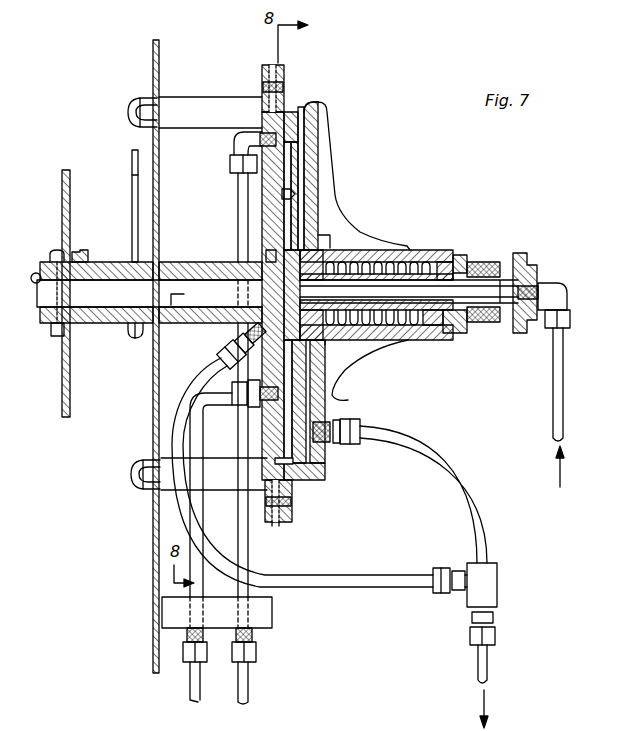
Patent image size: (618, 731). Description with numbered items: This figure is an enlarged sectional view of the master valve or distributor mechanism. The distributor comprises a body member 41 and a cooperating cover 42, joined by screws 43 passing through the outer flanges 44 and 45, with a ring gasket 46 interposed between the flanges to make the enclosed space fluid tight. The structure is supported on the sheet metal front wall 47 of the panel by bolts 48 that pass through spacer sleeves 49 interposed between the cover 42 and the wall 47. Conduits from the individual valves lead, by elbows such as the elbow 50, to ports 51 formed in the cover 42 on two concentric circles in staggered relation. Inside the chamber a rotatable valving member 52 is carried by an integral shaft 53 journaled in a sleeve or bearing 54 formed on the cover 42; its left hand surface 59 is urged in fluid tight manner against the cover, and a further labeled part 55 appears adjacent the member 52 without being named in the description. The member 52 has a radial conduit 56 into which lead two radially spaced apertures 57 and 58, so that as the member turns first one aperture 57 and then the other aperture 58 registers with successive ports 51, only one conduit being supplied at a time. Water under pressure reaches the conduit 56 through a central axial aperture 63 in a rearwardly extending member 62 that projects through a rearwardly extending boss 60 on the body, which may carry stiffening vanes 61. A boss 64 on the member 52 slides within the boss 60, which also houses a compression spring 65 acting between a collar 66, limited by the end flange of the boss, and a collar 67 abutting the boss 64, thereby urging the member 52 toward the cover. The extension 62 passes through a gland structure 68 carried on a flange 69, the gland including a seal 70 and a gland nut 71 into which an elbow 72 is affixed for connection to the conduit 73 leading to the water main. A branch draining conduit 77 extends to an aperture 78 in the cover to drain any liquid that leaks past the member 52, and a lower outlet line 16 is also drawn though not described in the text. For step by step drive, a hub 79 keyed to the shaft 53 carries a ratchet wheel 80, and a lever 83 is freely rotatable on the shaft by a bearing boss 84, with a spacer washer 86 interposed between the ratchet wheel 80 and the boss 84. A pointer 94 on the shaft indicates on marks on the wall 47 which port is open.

The outlet pipe 16 is at (490, 670).
The body member 41 is at (321, 116).
The cover 42 is at (268, 230).
The screws 43 is at (280, 110).
The outer flange 44 is at (285, 62).
The outer flange 45 is at (262, 68).
The ring gasket 46 is at (275, 522).
The front wall 47 is at (153, 62).
The bolts 48 is at (128, 110).
The spacer sleeves 49 is at (184, 100).
The elbow 50 is at (232, 148).
The ports 51 is at (289, 110).
The rotatable valving member 52 is at (318, 457).
The shaft 53 is at (205, 298).
The sleeve or bearing 54 is at (178, 258).
The inner wall 55 is at (312, 165).
The radial conduit 56 is at (295, 217).
The aperture 57 is at (306, 106).
The aperture 58 is at (282, 194).
The left hand surface 59 is at (272, 431).
The boss 60 is at (423, 248).
The stiffening vanes 61 is at (347, 230).
The rearwardly extending member 62 is at (457, 333).
The axial aperture 63 is at (466, 290).
The boss 64 is at (320, 232).
The compression spring 65 is at (384, 248).
The collar 66 is at (436, 330).
The collar 67 is at (322, 338).
The gland structure 68 is at (480, 330).
The flange 69 is at (460, 249).
The seal 70 is at (474, 268).
The gland nut 71 is at (528, 258).
The elbow 72 is at (560, 287).
The conduit 73 is at (567, 383).
The branch draining conduit 77 is at (343, 590).
The aperture 78 is at (232, 337).
The hub 79 is at (38, 262).
The ratchet wheel 80 is at (62, 196).
The lever 83 is at (75, 250).
The bearing boss 84 is at (93, 323).
The spacer washer 86 is at (68, 330).
The pointer 94 is at (132, 196).